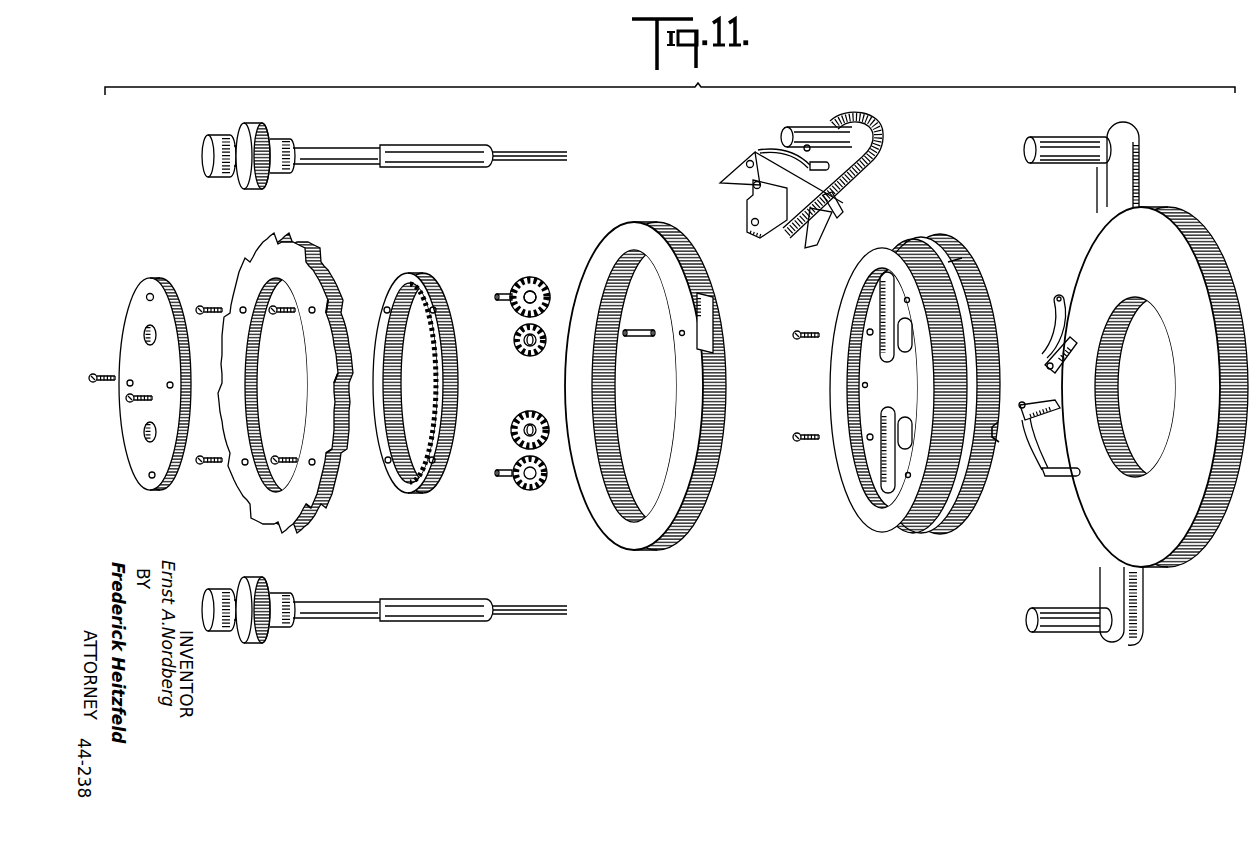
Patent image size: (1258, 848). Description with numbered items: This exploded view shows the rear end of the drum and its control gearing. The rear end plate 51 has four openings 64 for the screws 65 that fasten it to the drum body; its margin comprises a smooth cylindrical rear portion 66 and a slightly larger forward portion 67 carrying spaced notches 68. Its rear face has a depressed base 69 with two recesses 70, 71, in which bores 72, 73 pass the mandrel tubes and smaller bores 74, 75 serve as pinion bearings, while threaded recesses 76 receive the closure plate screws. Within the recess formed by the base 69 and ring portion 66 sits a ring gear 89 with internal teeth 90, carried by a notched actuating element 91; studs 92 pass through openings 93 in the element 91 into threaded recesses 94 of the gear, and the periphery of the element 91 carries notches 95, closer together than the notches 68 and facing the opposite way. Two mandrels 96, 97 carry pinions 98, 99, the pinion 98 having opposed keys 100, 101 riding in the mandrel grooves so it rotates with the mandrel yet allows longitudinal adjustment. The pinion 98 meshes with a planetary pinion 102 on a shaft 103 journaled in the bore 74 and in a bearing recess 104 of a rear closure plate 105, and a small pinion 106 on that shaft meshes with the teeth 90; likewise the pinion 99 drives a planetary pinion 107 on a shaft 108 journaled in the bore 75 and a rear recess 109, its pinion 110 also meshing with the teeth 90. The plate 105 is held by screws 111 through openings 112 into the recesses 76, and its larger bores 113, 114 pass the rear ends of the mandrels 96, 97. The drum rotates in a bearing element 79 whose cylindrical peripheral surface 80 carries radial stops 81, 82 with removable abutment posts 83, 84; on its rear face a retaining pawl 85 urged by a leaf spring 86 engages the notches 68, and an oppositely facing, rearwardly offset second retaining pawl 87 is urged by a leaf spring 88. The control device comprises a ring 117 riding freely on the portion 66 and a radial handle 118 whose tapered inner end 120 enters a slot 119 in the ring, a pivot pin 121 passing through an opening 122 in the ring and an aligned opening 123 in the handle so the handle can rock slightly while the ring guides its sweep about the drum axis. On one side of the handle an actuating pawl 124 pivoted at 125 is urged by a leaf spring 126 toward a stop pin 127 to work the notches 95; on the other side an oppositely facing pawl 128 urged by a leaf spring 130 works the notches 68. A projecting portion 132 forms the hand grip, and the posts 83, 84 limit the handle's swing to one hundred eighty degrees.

The rear end plate 51 is at (886, 392).
The openings 64 is at (866, 331).
The screws or fasteners 65 is at (793, 340).
The rear portion 66 is at (902, 257).
The forward portion 67 is at (972, 288).
The notches 68 is at (962, 258).
The depressed base 69 is at (857, 375).
The recess 70 is at (880, 286).
The recess 71 is at (897, 484).
The bore 72 is at (913, 333).
The bore 73 is at (881, 470).
The bore 74 is at (916, 270).
The bore 75 is at (912, 476).
The threaded recesses 76 is at (920, 388).
The bearing element 79 is at (1207, 577).
The peripheral surface 80 is at (1235, 473).
The stop 81 is at (1134, 169).
The stop 82 is at (1124, 646).
The abutment post 83 is at (1058, 138).
The abutment post 84 is at (1048, 634).
The retaining pawl 85 is at (1069, 345).
The leaf spring 86 is at (1052, 310).
The second retaining pawl 87 is at (1046, 424).
The leaf spring 88 is at (1040, 488).
The ring gear 89 is at (414, 494).
The internal teeth 90 is at (419, 383).
The notched actuating element 91 is at (296, 542).
The studs or fasteners 92 is at (207, 305).
The openings 93 is at (242, 306).
The threaded recesses 94 is at (385, 312).
The notches 95 is at (340, 470).
The mandrel 96 is at (431, 141).
The mandrel 97 is at (396, 629).
The pinion 98 is at (519, 357).
The pinion 99 is at (511, 428).
The key 100 is at (515, 340).
The key 101 is at (522, 345).
The planetary pinion 102 is at (544, 290).
The shaft 103 is at (500, 292).
The bearing recess 104 is at (150, 293).
The rear closure plate 105 is at (123, 342).
The pinion 106 is at (530, 277).
The planetary pinion 107 is at (538, 490).
The shaft 108 is at (497, 478).
The rear recess 109 is at (148, 477).
The pinion 110 is at (520, 486).
The screws 111 is at (100, 397).
The openings 112 is at (167, 384).
The bore 113 is at (145, 332).
The bore 114 is at (143, 436).
The ring part 117 is at (704, 475).
The handle 118 is at (892, 131).
The slot 119 is at (714, 316).
The inner tapered end 120 is at (746, 222).
The pivot pin 121 is at (640, 330).
The opening 122 is at (679, 336).
The opening 123 is at (753, 227).
The actuating pawl 124 is at (732, 172).
The pivot 125 is at (810, 170).
The leaf spring 126 is at (760, 150).
The stop pin 127 is at (751, 188).
The pawl 128 is at (812, 248).
The leaf spring 130 is at (843, 205).
The projecting portion 132 is at (799, 127).